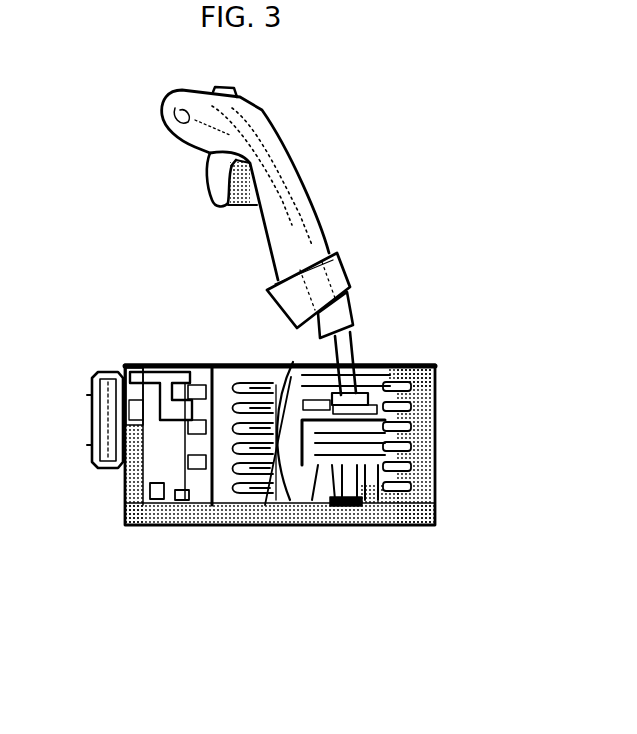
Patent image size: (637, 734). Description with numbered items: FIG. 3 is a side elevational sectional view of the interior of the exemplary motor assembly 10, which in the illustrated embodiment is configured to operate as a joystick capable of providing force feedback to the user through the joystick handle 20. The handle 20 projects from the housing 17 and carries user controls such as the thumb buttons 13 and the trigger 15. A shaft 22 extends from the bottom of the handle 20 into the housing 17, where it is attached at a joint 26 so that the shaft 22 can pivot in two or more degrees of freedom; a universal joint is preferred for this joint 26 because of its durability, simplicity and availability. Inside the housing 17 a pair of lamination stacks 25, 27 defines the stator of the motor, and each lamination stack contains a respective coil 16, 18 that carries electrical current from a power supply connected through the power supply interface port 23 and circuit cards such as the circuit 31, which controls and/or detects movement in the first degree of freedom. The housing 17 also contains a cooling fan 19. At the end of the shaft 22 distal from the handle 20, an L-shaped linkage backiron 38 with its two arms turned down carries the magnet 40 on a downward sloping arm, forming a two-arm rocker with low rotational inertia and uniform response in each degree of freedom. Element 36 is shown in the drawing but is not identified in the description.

The motor assembly 10 is at (384, 155).
The thumb buttons 13 is at (216, 94).
The trigger 15 is at (210, 182).
The coil 16 is at (240, 364).
The housing 17 is at (425, 366).
The coil 18 is at (432, 396).
The cooling fan 19 is at (92, 410).
The joystick handle 20 is at (270, 120).
The shaft 22 is at (354, 352).
The power supply interface port 23 is at (155, 400).
The lamination stack 25 is at (223, 498).
The joint 26 is at (350, 505).
The lamination stack 27 is at (398, 364).
The circuit 31 is at (165, 484).
The post 36 is at (382, 520).
The linkage backiron 38 is at (332, 503).
The magnet 40 is at (272, 505).